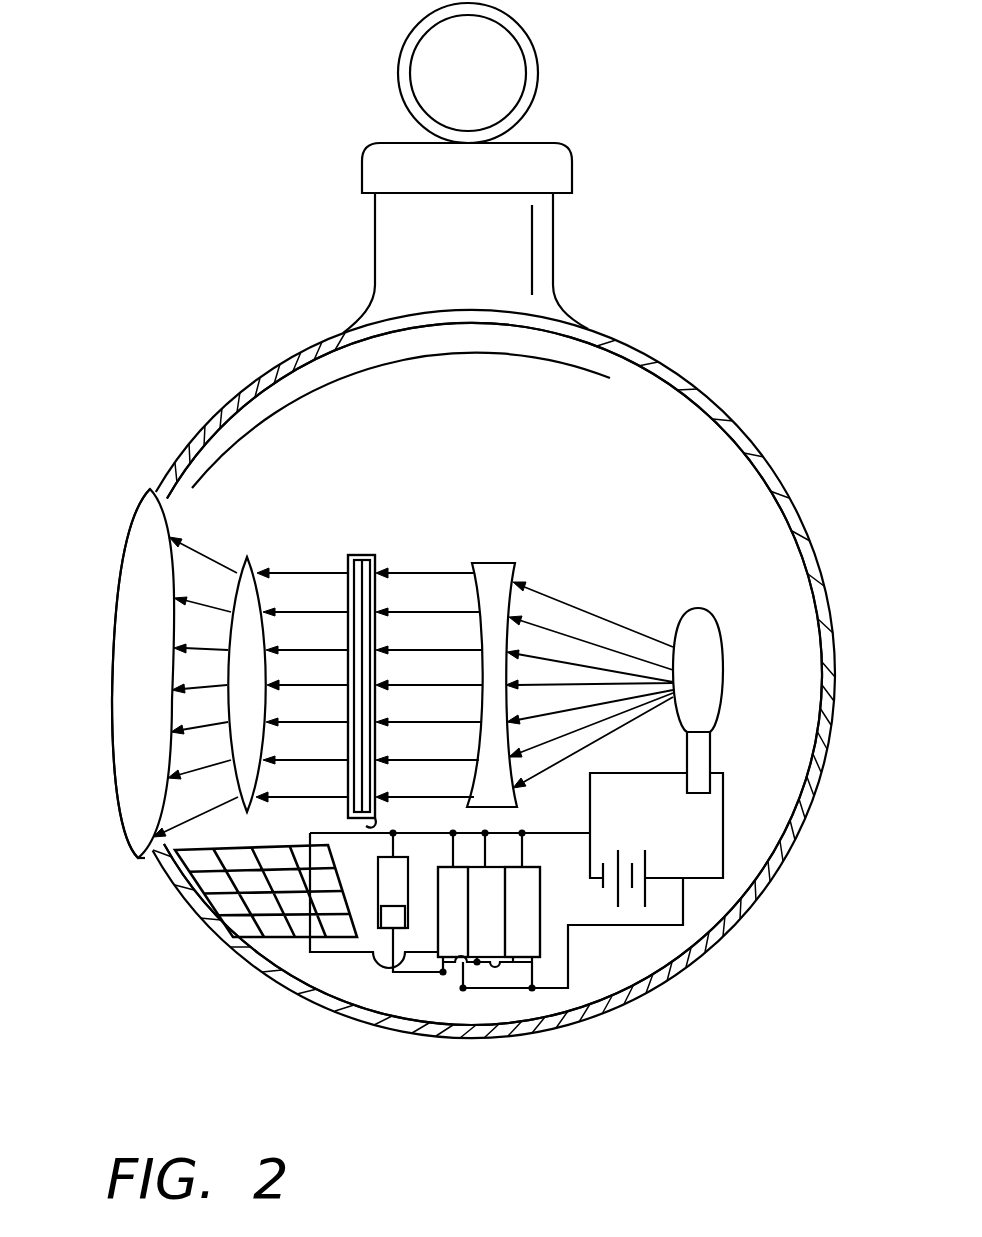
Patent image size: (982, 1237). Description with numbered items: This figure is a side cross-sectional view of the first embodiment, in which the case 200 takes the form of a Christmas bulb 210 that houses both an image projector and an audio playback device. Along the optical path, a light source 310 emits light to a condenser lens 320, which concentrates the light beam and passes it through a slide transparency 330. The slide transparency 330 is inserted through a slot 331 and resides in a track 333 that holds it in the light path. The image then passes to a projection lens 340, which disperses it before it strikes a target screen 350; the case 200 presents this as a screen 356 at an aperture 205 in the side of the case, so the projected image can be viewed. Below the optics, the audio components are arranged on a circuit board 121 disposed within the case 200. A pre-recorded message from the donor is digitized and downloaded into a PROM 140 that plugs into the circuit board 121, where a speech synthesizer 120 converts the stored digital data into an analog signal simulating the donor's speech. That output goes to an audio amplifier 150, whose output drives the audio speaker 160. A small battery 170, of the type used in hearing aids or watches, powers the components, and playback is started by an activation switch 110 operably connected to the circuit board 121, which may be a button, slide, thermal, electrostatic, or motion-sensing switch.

The activation switch 110 is at (373, 925).
The speech synthesizer 120 is at (480, 942).
The circuit board 121 is at (576, 985).
The Programmable Read Only Memory chip (PROM) 140 is at (525, 937).
The audio amplifier 150 is at (448, 923).
The audio speaker 160 is at (230, 937).
The battery 170 is at (650, 898).
The case 200 is at (670, 360).
The aperture 205 is at (133, 857).
The Christmas bulb 210 is at (670, 360).
The light source 310 is at (732, 660).
The condenser lens 320 is at (517, 563).
The slide transparency 330 is at (353, 555).
The slot 331 is at (378, 666).
The track 333 is at (378, 562).
The projection lens 340 is at (247, 557).
The target screen 350 is at (122, 700).
The screen 356 is at (87, 673).